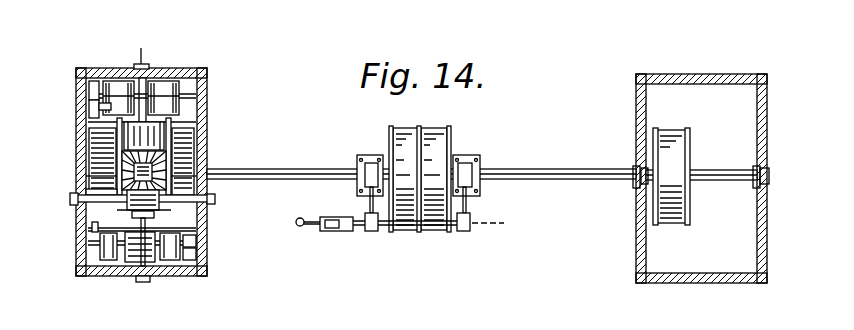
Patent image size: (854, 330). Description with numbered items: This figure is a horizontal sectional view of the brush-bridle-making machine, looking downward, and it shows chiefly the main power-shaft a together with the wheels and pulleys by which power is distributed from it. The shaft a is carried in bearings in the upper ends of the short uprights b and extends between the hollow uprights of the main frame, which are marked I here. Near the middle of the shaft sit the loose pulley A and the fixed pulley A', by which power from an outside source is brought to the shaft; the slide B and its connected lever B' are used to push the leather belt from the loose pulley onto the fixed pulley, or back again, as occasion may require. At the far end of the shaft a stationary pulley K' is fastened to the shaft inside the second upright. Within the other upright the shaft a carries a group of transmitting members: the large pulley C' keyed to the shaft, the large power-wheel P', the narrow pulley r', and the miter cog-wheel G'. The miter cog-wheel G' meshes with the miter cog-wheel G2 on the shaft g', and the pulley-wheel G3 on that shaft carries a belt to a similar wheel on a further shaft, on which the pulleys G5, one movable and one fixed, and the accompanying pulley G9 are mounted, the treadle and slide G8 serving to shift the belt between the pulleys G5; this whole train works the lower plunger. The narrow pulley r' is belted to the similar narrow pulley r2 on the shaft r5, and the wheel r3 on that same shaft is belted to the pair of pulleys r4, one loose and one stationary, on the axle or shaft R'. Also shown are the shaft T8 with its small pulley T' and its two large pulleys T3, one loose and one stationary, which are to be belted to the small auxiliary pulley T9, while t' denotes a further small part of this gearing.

The housing / casing I is at (207, 72).
The main power-shaft a is at (488, 169).
The stationary pulley K' is at (671, 190).
The fixed pulley A' is at (403, 171).
The loose pulley A is at (434, 171).
The short uprights b is at (367, 204).
The slide B is at (428, 233).
The lever B' is at (320, 236).
The shaft g' is at (152, 85).
The pulleys G5 is at (122, 90).
The accompanying pulley G9 is at (91, 84).
The treadle and slide G8 is at (92, 104).
The pulley-wheel G3 is at (164, 123).
The large pulley C' is at (159, 156).
The miter cog-wheel G2 is at (128, 153).
The miter cog-wheel G' is at (145, 161).
The axle or shaft R' is at (125, 200).
The narrow pulley r' is at (218, 201).
The large power-wheel P' is at (105, 211).
The small pulley T' is at (111, 242).
The bracket t' is at (75, 248).
The small auxiliary pulley T9 is at (128, 226).
The pulleys r4 is at (123, 254).
The wheel r3 is at (133, 268).
The shaft T8 is at (143, 282).
The large pulleys T3 is at (168, 261).
The narrow pulley r2 is at (196, 240).
The shaft r5 is at (192, 252).